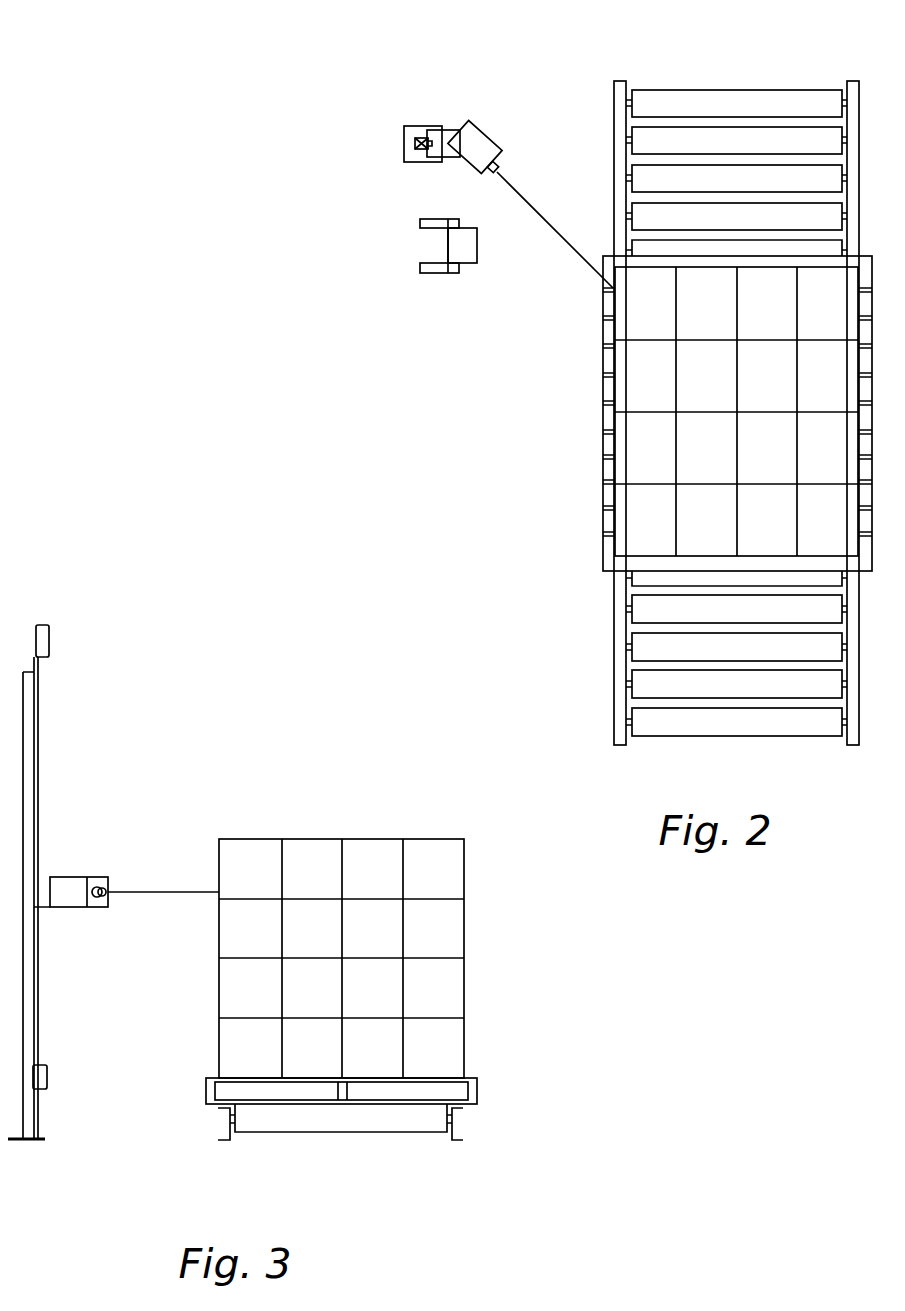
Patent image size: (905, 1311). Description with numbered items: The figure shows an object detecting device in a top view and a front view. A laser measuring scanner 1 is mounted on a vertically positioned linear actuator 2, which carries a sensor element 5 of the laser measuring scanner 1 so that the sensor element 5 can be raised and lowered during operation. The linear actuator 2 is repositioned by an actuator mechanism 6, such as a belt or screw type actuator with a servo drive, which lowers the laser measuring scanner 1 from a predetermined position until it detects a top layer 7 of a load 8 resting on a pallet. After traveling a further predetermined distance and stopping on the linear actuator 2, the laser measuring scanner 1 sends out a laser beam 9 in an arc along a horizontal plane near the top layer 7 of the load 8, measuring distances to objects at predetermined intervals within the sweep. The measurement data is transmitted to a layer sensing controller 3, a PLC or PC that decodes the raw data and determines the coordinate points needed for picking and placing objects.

In FIG. 2, the laser measuring scanner 1 is at (490, 133).
In FIG. 3, the laser measuring scanner 1 is at (68, 877).
In FIG. 2, the linear actuator 2 is at (404, 143).
In FIG. 3, the linear actuator 2 is at (38, 732).
In FIG. 2, the layer sensing controller 3 is at (450, 245).
In FIG. 2, the sensor element 5 is at (490, 173).
In FIG. 3, the sensor element 5 is at (107, 890).
In FIG. 3, the actuator mechanism 6 is at (50, 640).
In FIG. 2, the top layer 7 is at (644, 455).
In FIG. 3, the top layer 7 is at (308, 839).
In FIG. 2, the load 8 is at (602, 548).
In FIG. 3, the load 8 is at (464, 982).
In FIG. 2, the laser beam 9 is at (563, 240).
In FIG. 3, the laser beam 9 is at (182, 893).